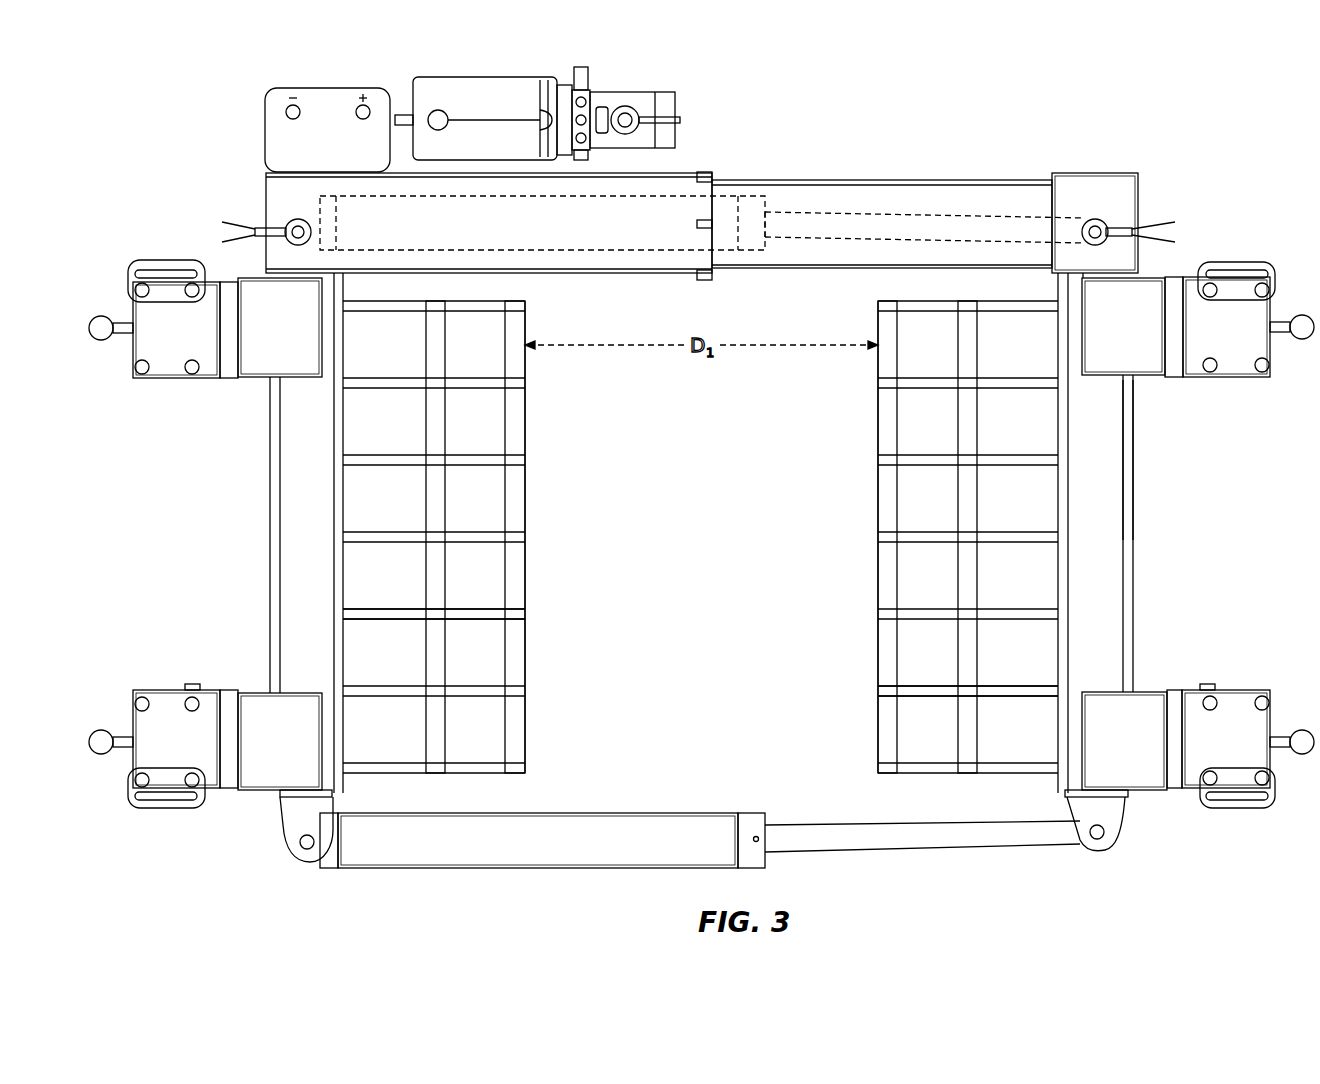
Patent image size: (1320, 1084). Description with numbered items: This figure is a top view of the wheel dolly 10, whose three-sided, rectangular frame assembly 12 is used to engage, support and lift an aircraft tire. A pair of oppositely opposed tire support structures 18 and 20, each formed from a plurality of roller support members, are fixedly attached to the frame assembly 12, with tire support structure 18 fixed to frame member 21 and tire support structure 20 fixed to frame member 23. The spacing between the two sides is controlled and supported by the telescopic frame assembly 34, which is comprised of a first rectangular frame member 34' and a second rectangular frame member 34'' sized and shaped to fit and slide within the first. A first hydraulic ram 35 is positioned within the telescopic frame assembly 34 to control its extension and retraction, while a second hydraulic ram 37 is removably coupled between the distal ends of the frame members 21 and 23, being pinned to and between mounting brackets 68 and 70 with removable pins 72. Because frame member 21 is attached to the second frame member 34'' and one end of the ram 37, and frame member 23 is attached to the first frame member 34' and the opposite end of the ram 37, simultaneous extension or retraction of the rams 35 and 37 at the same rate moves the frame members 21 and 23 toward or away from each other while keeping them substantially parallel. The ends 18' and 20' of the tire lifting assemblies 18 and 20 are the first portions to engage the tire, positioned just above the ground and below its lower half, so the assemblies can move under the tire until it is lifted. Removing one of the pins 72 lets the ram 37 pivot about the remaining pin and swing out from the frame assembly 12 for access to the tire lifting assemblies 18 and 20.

The wheel dolly 10 is at (1195, 180).
The frame assembly 12 is at (1115, 568).
The tire support structure 18 is at (928, 533).
The end of tire lifting assembly 18' is at (922, 672).
The tire support structure 20 is at (491, 533).
The end of tire lifting assembly 20' is at (492, 605).
The frame member 21 is at (1113, 458).
The frame member 23 is at (290, 479).
The telescopic frame assembly 34 is at (882, 192).
The first rectangular frame member 34' is at (845, 162).
The second rectangular frame member 34'' is at (1080, 196).
The first hydraulic ram 35 is at (683, 185).
The second hydraulic ram 37 is at (470, 852).
The mounting bracket 68 is at (1115, 815).
The mounting bracket 70 is at (290, 820).
The removable pin 72 is at (300, 845).